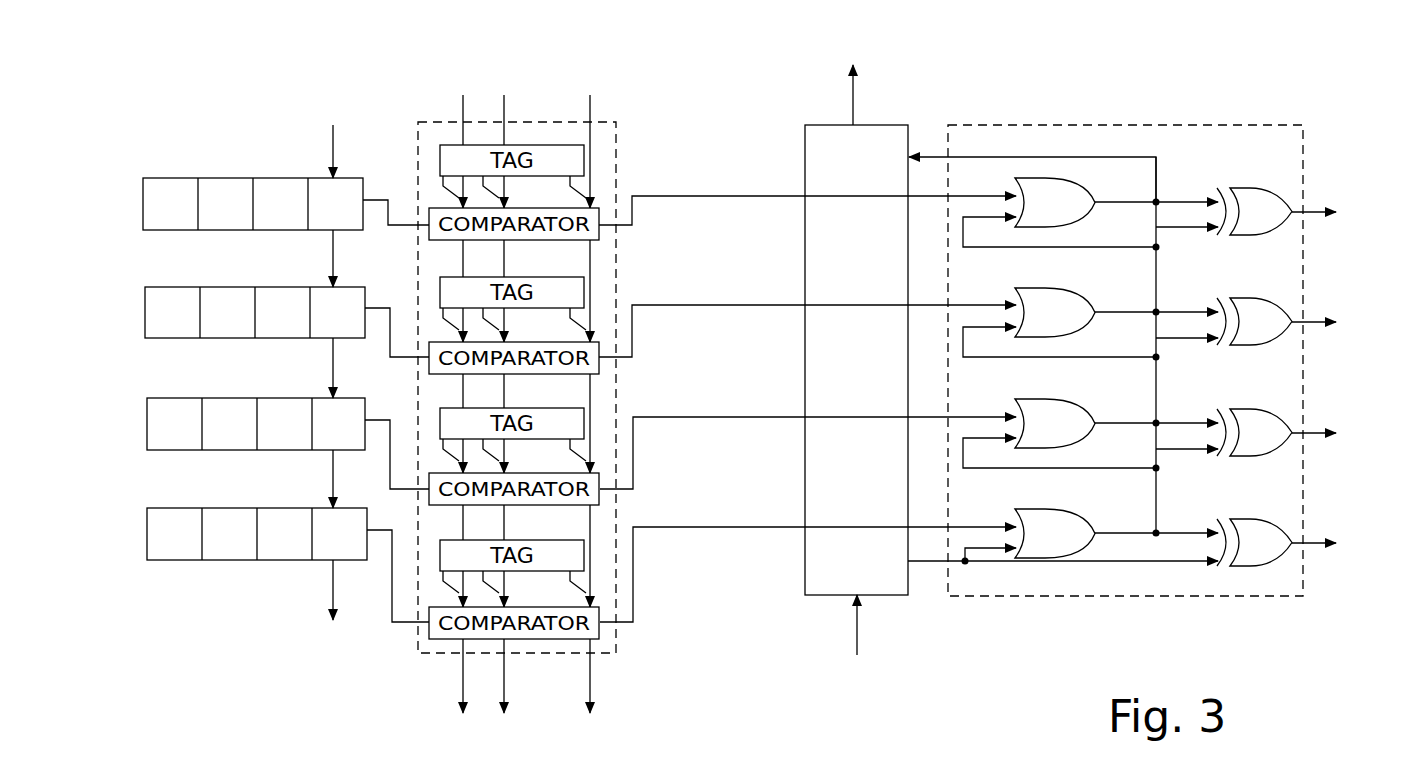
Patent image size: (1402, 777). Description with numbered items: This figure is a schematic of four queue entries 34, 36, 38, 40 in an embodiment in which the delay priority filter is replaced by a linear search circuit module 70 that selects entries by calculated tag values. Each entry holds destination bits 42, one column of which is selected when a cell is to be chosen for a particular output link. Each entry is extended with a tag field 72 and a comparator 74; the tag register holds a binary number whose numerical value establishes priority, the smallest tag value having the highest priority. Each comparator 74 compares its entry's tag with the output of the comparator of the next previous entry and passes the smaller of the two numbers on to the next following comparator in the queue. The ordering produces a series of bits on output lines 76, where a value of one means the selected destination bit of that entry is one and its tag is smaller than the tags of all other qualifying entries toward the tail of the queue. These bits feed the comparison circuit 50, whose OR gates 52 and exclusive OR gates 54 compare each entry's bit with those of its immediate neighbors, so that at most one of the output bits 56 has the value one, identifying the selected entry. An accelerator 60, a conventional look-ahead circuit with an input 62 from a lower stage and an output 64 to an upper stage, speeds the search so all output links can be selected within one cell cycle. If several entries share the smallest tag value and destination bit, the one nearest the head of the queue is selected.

The first register 34 is at (143, 207).
The second register 36 is at (145, 306).
The third register 38 is at (147, 428).
The fourth register 40 is at (147, 533).
The destination bits 42 is at (168, 190).
The comparison circuit 50 is at (1185, 125).
The OR gates 52 is at (1063, 178).
The exclusive OR gates 54 is at (1245, 188).
The output bits 56 is at (1350, 198).
The accelerator 60 is at (805, 582).
The input 62 is at (858, 650).
The output 64 is at (853, 107).
The linear search circuit module 70 is at (632, 113).
The tag field 72 is at (532, 143).
The comparator 74 is at (520, 208).
The output lines 76 is at (697, 195).